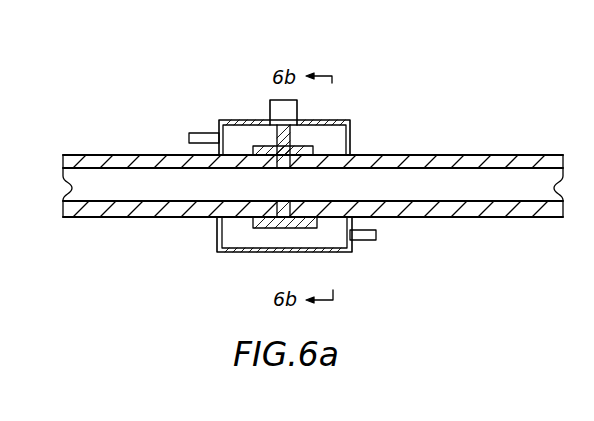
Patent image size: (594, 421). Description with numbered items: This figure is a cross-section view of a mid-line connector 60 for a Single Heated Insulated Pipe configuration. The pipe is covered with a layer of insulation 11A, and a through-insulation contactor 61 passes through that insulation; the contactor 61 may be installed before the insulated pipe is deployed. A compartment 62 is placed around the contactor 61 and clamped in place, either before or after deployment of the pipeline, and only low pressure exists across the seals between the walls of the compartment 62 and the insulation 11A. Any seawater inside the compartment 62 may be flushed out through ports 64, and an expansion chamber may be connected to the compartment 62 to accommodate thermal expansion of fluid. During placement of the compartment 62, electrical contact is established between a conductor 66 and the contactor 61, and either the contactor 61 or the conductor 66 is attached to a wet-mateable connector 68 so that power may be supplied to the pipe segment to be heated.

The mid-line connector 60 is at (243, 169).
The insulation 11A is at (122, 162).
The compartment 62 is at (340, 128).
The ports 64 is at (208, 132).
The conductor 66 is at (288, 140).
The wet-mateable connector 68 is at (278, 110).
The through-insulation contactor 61 is at (272, 222).